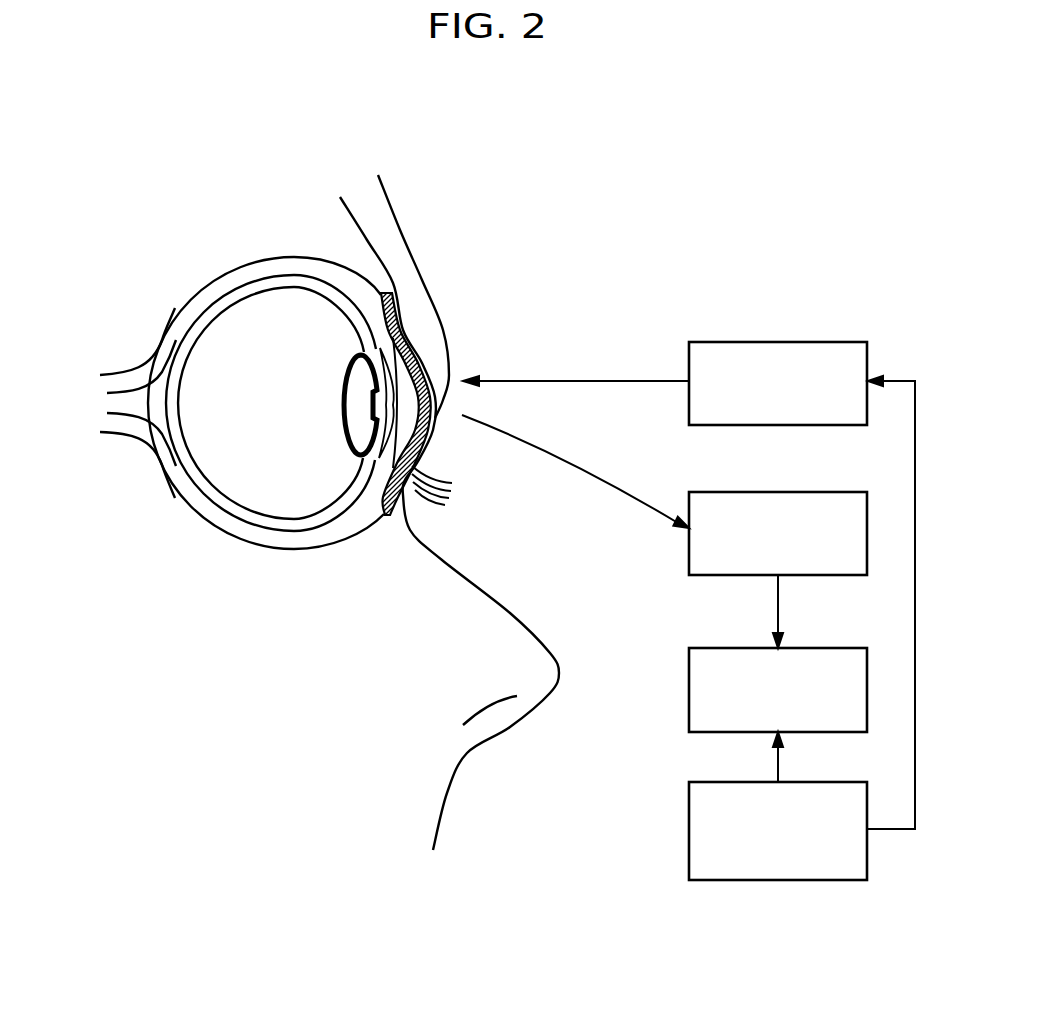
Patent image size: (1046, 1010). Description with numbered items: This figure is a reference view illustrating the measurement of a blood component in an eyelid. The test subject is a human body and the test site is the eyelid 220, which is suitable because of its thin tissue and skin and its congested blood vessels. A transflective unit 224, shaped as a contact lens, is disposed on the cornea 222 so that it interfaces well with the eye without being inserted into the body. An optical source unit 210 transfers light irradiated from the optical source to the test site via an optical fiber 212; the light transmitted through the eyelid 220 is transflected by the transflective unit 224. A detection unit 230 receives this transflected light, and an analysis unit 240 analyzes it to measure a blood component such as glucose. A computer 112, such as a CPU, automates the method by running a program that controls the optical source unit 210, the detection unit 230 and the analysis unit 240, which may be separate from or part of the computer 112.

The eyelid 220 is at (380, 223).
The cornea 222 is at (357, 288).
The transflective unit 224 is at (408, 333).
The optical source unit 210 is at (818, 340).
The optical fiber 212 is at (613, 375).
The detection unit 230 is at (818, 490).
The analysis unit 240 is at (817, 647).
The computer 112 is at (688, 834).